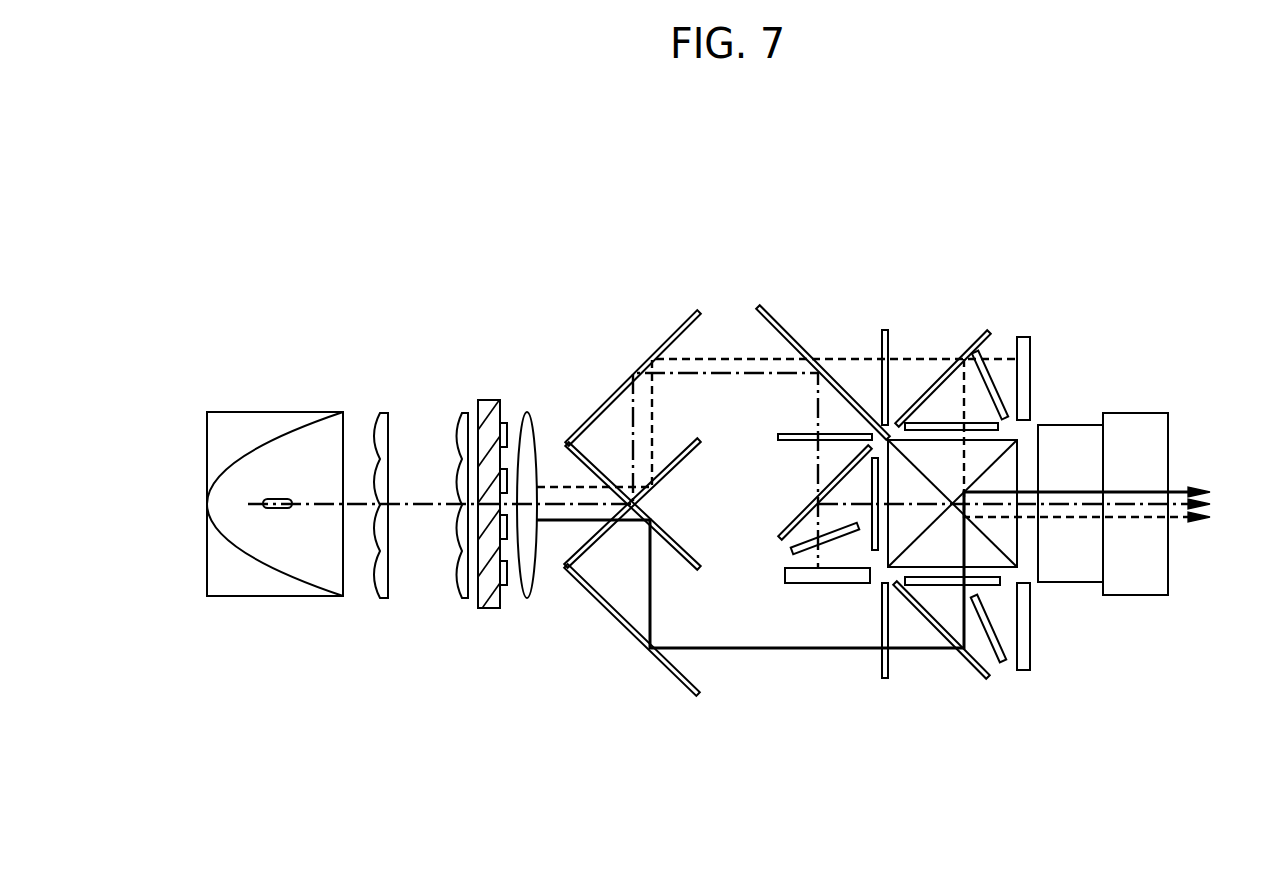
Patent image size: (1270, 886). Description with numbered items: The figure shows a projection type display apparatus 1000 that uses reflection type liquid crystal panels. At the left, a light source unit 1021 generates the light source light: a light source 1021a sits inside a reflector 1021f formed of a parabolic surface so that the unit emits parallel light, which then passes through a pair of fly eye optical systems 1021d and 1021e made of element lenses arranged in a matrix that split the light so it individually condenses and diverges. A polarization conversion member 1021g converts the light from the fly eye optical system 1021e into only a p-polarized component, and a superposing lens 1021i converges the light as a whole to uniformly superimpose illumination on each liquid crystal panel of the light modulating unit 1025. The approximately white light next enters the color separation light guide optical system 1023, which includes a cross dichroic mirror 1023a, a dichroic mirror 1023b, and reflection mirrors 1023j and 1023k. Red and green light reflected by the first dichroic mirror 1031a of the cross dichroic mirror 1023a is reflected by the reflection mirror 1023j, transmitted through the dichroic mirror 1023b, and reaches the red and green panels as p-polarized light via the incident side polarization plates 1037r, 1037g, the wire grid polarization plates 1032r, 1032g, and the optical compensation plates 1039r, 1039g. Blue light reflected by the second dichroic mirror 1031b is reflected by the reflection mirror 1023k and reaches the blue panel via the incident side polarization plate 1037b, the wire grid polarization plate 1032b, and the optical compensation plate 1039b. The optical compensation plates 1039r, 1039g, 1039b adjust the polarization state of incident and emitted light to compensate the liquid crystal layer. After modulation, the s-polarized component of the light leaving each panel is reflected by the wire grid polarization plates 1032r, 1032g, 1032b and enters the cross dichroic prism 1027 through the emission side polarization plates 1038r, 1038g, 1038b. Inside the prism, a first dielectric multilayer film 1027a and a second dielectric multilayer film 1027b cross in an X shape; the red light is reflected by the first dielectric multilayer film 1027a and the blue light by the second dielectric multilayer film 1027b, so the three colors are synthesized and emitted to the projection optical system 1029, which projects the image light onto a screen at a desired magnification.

The projection type display apparatus 1000 is at (640, 230).
The light source unit 1021 is at (347, 283).
The light source 1021a is at (310, 455).
The fly eye optical system 1021d is at (383, 413).
The fly eye optical system 1021e is at (465, 412).
The reflector 1021f is at (270, 572).
The polarization conversion member 1021g is at (478, 400).
The superposing lens 1021i is at (527, 412).
The color separation light guide optical system 1023 is at (731, 270).
The cross dichroic mirror 1023a is at (710, 449).
The dichroic mirror 1023b is at (785, 332).
The reflection mirror 1023j is at (672, 338).
The reflection mirror 1023k is at (688, 690).
The first dichroic mirror 1031a is at (668, 478).
The second dichroic mirror 1031b is at (602, 470).
The wire grid polarization plate 1032r is at (984, 336).
The wire grid polarization plate 1032g is at (786, 541).
The wire grid polarization plate 1032b is at (985, 676).
The incident side polarization plate 1037r is at (888, 338).
The incident side polarization plate 1037g is at (778, 440).
The incident side polarization plate 1037b is at (888, 680).
The emission side polarization plate 1038r is at (1000, 428).
The emission side polarization plate 1038g is at (874, 552).
The emission side polarization plate 1038b is at (1003, 581).
The optical compensation plate 1039r is at (978, 354).
The optical compensation plate 1039g is at (790, 556).
The optical compensation plate 1039b is at (1003, 665).
The light modulating unit 1025 is at (1110, 333).
The cross dichroic prism 1027 is at (1018, 462).
The first dielectric multilayer film 1027a is at (1000, 543).
The second dielectric multilayer film 1027b is at (1020, 477).
The projection optical system 1029 is at (1148, 418).